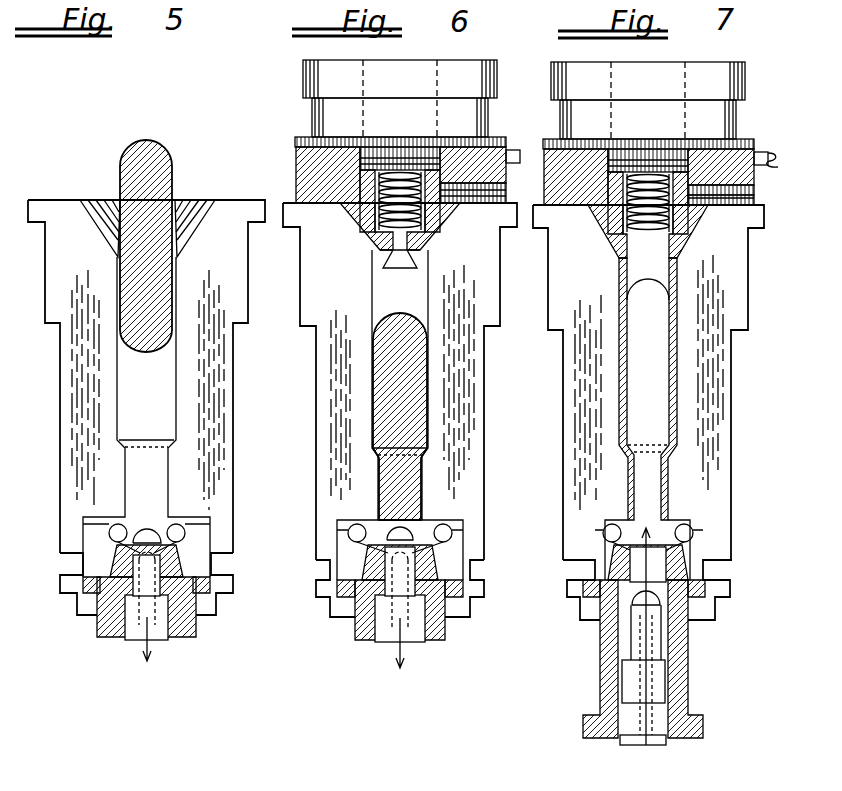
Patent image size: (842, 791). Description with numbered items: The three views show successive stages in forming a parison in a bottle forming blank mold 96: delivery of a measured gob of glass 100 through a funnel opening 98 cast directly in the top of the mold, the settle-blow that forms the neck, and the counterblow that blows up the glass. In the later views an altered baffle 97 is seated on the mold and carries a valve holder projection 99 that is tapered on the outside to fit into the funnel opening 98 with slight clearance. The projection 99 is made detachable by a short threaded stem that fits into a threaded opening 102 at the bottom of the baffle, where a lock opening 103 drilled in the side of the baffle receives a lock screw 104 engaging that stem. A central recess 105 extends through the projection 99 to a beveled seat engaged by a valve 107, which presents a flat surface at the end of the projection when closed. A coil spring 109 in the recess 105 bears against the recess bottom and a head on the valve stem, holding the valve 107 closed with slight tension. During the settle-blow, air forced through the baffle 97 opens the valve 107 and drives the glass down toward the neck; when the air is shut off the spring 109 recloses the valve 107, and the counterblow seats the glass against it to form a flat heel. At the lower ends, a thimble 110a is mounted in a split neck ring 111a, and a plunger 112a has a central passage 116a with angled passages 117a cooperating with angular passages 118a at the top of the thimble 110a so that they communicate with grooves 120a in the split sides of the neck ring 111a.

In FIG. 5, the blank mold 96 is at (222, 403).
In FIG. 6, the blank mold 96 is at (475, 417).
In FIG. 7, the blank mold 96 is at (720, 437).
In FIG. 6, the baffle 97 is at (296, 158).
In FIG. 5, the funnel opening 98 is at (100, 236).
In FIG. 6, the funnel opening 98 is at (364, 254).
In FIG. 7, the funnel opening 98 is at (610, 232).
In FIG. 6, the valve holder projection 99 is at (342, 237).
In FIG. 7, the valve holder projection 99 is at (620, 250).
In FIG. 5, the gob of glass 100 is at (172, 185).
In FIG. 6, the gob of glass 100 is at (400, 416).
In FIG. 7, the opening 102 is at (730, 143).
In FIG. 7, the lock opening 103 is at (752, 188).
In FIG. 7, the lock screw 104 is at (752, 200).
In FIG. 6, the central recess 105 is at (445, 226).
In FIG. 6, the valve 107 is at (400, 250).
In FIG. 7, the valve 107 is at (641, 292).
In FIG. 7, the coil spring 109 is at (673, 215).
In FIG. 5, the thimble 110a is at (110, 622).
In FIG. 7, the thimble 110a is at (682, 668).
In FIG. 5, the split neck ring 111a is at (208, 574).
In FIG. 6, the split neck ring 111a is at (462, 575).
In FIG. 7, the split neck ring 111a is at (708, 580).
In FIG. 5, the plunger 112a is at (160, 627).
In FIG. 6, the plunger 112a is at (405, 627).
In FIG. 7, the plunger 112a is at (630, 680).
In FIG. 5, the central passage 116a is at (135, 622).
In FIG. 5, the passages 117a is at (118, 568).
In FIG. 6, the passages 117a is at (440, 538).
In FIG. 5, the angular passages 118a is at (130, 550).
In FIG. 5, the grooves 120a is at (186, 536).